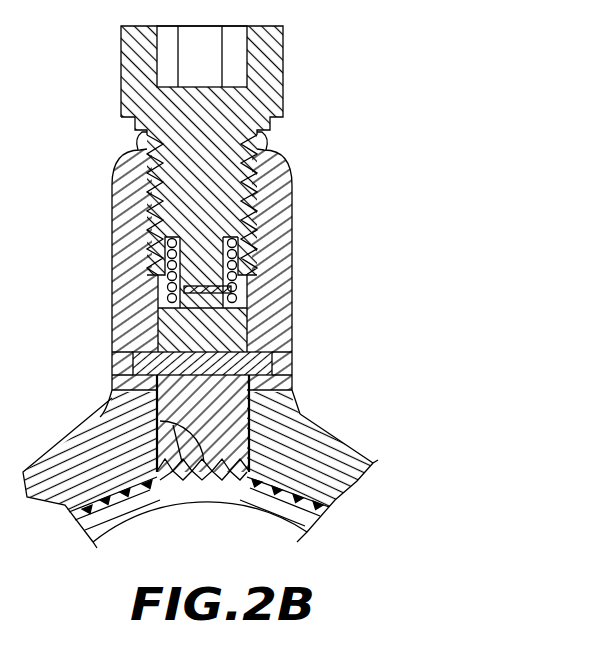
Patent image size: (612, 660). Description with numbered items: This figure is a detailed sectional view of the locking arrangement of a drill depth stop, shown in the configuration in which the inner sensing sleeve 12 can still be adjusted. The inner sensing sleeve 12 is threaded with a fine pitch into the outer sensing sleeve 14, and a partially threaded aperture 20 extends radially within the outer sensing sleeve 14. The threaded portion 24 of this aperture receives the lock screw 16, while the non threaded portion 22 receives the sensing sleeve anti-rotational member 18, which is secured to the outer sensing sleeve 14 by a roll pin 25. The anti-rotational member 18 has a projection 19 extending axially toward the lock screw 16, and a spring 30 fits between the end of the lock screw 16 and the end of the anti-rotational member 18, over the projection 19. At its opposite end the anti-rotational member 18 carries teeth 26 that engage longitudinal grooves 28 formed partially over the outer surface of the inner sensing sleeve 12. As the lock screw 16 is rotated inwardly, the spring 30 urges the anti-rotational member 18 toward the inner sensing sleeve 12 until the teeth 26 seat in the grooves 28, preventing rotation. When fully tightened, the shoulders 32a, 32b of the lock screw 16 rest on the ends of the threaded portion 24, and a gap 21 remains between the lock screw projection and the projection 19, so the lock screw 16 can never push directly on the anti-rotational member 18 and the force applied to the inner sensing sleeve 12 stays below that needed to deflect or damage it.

The lock screw 16 is at (284, 67).
The shoulder 32a is at (142, 133).
The shoulder 32b is at (268, 128).
The threaded portion 24 is at (290, 184).
The gap 21 is at (187, 289).
The partially threaded aperture 20 is at (162, 300).
The spring 30 is at (240, 295).
The projection 19 is at (200, 303).
The roll pin 25 is at (272, 366).
The non threaded portion 22 is at (275, 425).
The sensing sleeve anti-rotational member 18 is at (218, 435).
The outer sensing sleeve 14 is at (352, 470).
The teeth 26 is at (157, 421).
The longitudinal grooves 28 is at (163, 478).
The inner sensing sleeve 12 is at (222, 500).